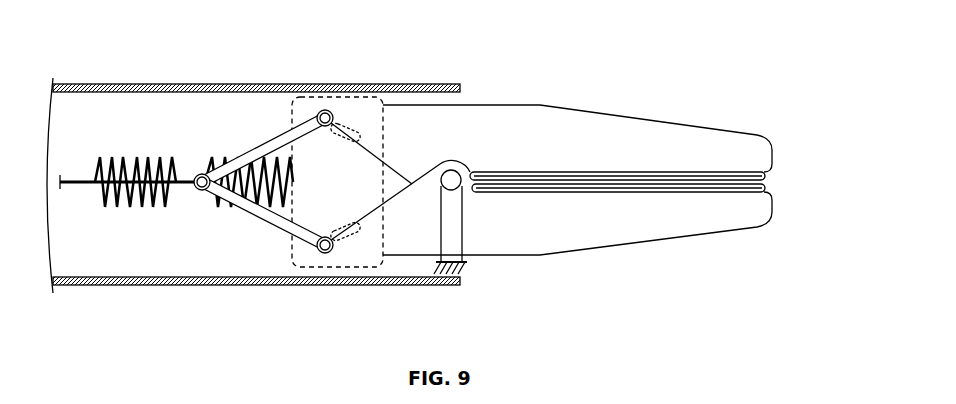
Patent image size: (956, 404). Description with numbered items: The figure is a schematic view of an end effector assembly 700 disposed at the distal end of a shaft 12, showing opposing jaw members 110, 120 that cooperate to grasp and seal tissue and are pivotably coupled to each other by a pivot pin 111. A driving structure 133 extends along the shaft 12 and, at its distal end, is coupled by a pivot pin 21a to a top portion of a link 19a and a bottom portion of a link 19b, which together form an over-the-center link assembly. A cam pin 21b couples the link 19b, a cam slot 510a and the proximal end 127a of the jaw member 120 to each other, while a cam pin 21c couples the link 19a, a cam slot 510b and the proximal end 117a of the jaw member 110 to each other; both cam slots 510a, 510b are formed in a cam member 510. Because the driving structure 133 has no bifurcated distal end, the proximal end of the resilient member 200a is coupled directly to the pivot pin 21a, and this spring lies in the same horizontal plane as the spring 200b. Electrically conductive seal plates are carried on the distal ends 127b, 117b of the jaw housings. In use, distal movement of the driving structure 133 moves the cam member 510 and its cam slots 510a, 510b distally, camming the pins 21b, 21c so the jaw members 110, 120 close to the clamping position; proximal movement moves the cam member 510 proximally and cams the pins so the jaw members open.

The end effector assembly 700 is at (701, 62).
The shaft 12 is at (157, 83).
The driving structure 133 is at (92, 178).
The resilient member 200a is at (210, 157).
The spring 200b is at (130, 207).
The link 19a is at (273, 230).
The link 19b is at (273, 133).
The pivot pin 21a is at (200, 190).
The cam pin 21b is at (325, 108).
The cam pin 21c is at (325, 255).
The cam member 510 is at (358, 97).
The cam slot 510a is at (345, 110).
The cam slot 510b is at (345, 253).
The pivot pin 111 is at (452, 168).
The jaw member 120 is at (613, 118).
The jaw member 110 is at (613, 249).
The proximal end of the jaw member 127a is at (385, 105).
The distal end of the jaw housing 127b is at (576, 109).
The proximal end of the jaw member 117a is at (387, 262).
The distal end of the jaw housing 117b is at (576, 251).